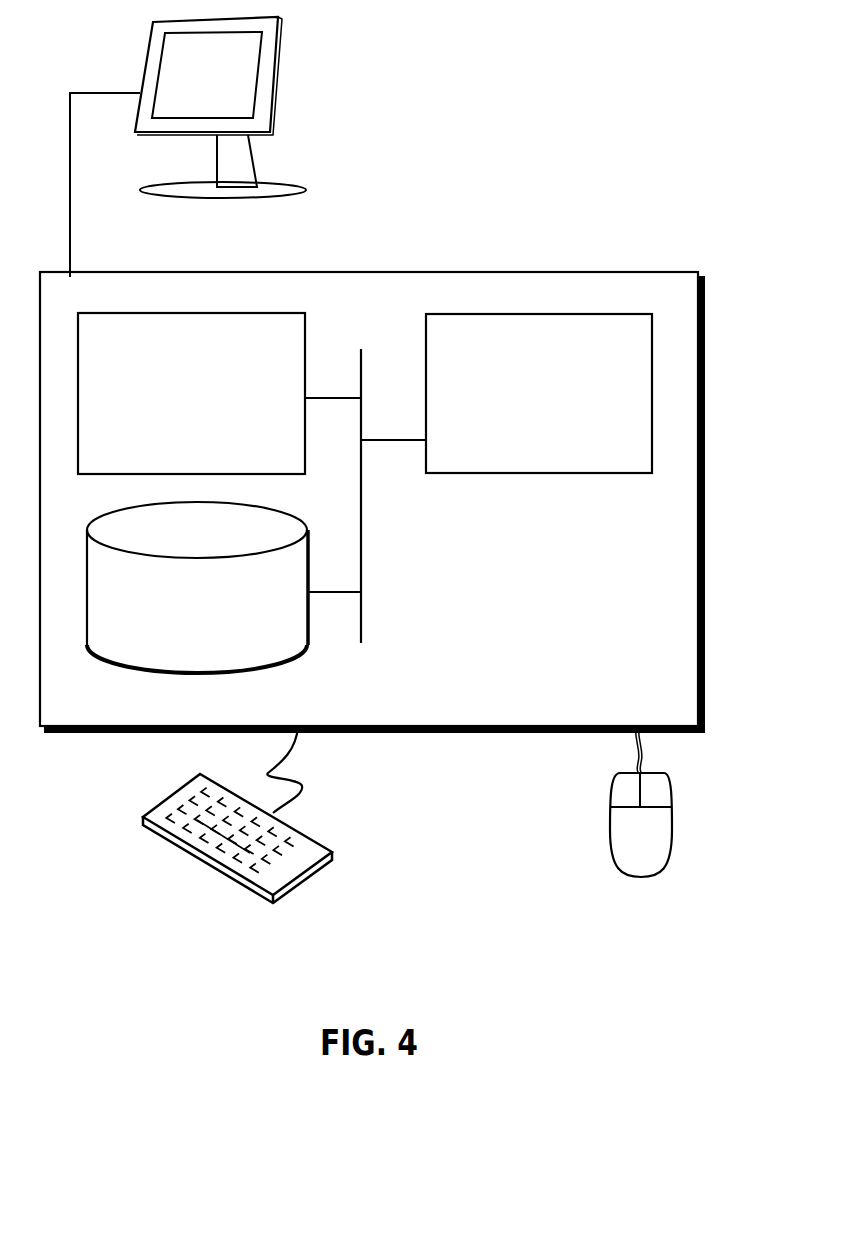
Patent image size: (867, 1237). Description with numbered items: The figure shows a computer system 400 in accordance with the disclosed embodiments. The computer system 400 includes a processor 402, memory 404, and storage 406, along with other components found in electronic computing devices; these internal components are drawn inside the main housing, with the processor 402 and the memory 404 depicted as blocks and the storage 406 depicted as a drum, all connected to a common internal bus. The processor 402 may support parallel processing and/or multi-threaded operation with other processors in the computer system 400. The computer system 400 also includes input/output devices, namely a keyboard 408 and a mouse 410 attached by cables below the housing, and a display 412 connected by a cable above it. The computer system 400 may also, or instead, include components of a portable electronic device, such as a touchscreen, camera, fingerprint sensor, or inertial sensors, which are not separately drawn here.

The computer system 400 is at (415, 250).
The processor 402 is at (521, 407).
The memory 404 is at (171, 406).
The storage 406 is at (178, 617).
The keyboard 408 is at (162, 838).
The mouse 410 is at (619, 847).
The display 412 is at (188, 147).